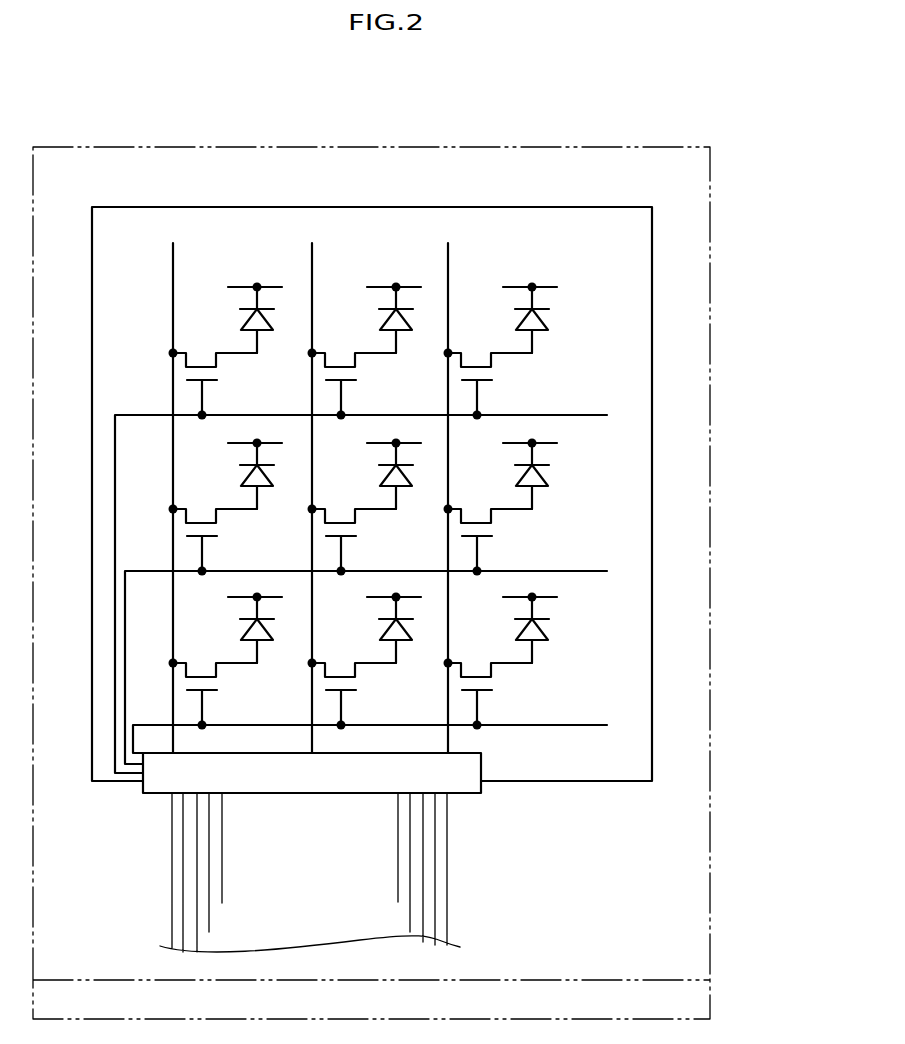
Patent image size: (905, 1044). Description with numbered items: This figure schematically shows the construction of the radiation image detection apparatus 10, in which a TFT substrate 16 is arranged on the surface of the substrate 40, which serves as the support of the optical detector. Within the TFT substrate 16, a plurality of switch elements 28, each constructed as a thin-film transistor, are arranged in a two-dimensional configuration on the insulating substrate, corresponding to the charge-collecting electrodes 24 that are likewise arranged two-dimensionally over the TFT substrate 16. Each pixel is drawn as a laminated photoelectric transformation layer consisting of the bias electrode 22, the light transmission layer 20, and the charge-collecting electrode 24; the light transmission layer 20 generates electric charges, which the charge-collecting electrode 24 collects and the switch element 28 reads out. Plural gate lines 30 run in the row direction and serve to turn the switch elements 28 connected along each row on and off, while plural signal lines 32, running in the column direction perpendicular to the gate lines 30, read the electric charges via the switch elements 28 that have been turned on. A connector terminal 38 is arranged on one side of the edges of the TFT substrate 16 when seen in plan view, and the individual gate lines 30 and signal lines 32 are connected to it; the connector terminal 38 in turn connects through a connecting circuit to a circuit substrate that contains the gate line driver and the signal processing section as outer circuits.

The radiation image detection apparatus 10 is at (671, 93).
The TFT substrate 16 is at (495, 197).
The light transmission layer 20 is at (359, 502).
The bias electrode 22 is at (359, 502).
The charge-collecting electrode 24 is at (263, 342).
The switch element 28 is at (210, 341).
The gate line 30 is at (590, 416).
The signal line 32 is at (173, 266).
The connector terminal 38 is at (466, 792).
The substrate 40 is at (710, 213).